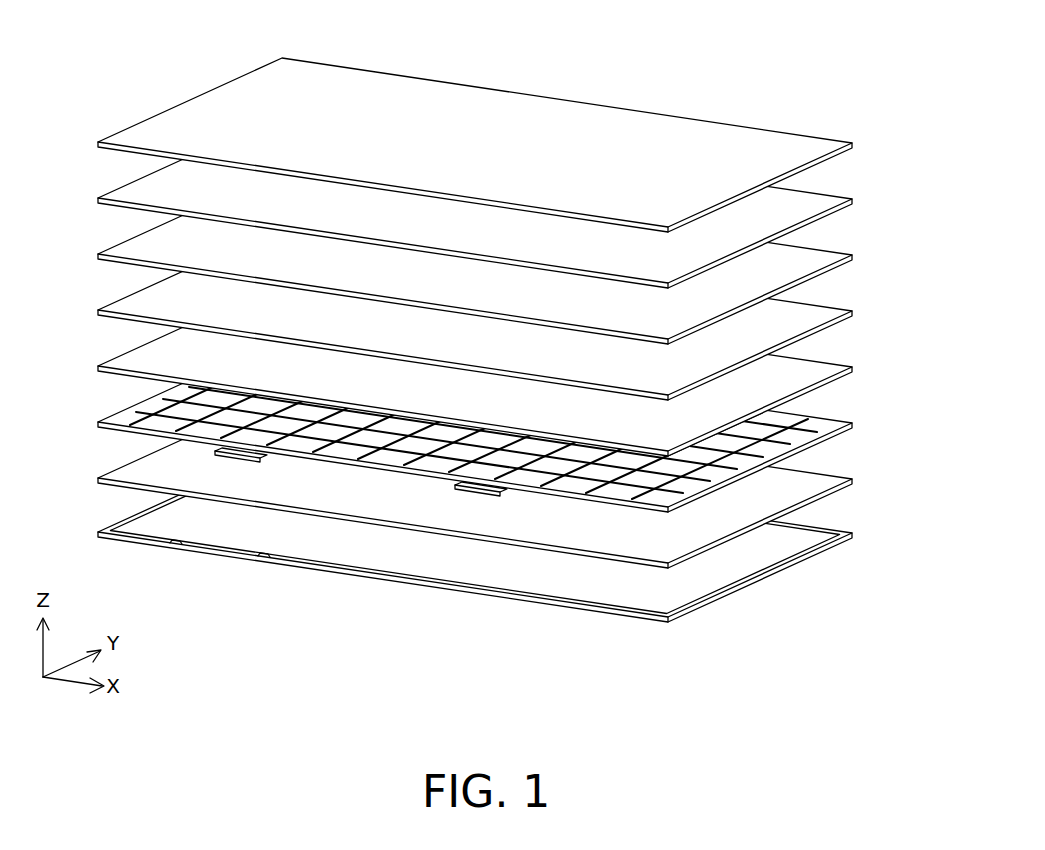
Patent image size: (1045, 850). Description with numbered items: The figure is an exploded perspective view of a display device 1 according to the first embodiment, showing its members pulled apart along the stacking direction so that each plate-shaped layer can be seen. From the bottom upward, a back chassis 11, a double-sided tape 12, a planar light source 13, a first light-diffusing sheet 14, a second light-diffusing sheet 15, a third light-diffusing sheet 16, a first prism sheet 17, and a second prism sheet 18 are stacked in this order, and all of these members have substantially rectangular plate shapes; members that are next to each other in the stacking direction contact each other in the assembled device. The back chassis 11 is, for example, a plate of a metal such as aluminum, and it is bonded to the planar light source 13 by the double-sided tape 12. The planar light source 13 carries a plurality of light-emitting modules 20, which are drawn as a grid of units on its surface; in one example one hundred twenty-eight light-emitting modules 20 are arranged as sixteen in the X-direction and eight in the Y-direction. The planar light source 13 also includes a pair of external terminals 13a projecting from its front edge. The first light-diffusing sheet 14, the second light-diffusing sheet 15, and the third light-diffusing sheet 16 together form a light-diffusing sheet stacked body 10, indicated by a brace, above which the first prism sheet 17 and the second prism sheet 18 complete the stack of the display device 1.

The display device 1 is at (772, 70).
The light-diffusing sheet stacked body 10 is at (893, 220).
The back chassis 11 is at (825, 532).
The double-sided tape 12 is at (825, 478).
The planar light source 13 is at (467, 502).
The external terminals 13a is at (237, 453).
The first light-diffusing sheet 14 is at (825, 366).
The second light-diffusing sheet 15 is at (825, 310).
The third light-diffusing sheet 16 is at (825, 254).
The first prism sheet 17 is at (825, 198).
The second prism sheet 18 is at (825, 142).
The light-emitting modules 20 is at (328, 453).